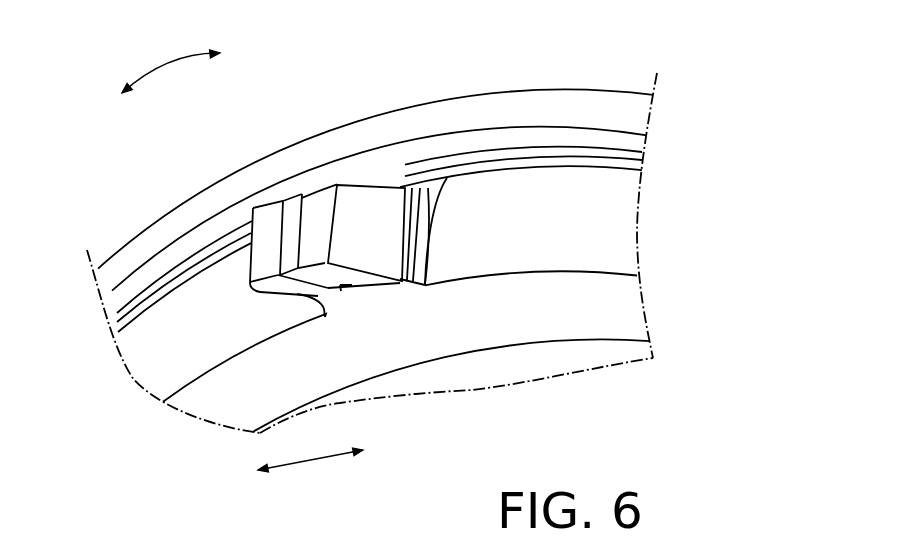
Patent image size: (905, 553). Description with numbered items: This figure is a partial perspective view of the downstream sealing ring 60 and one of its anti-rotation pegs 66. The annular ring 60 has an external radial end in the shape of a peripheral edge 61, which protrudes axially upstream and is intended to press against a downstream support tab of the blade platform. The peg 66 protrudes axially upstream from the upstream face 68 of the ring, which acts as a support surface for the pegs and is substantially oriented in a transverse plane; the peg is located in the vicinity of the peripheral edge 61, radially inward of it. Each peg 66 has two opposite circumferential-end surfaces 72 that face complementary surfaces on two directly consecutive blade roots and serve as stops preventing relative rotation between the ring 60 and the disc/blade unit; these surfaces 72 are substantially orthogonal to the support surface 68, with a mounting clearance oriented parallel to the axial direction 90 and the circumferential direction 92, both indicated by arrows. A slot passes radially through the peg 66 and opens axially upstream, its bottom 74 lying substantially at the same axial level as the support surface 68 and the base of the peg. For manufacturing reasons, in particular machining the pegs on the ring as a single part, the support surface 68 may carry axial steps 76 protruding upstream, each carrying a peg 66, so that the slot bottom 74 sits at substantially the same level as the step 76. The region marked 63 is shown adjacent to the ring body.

The downstream sealing ring 60 is at (203, 170).
The peripheral edge 61 is at (527, 107).
The front face of duct 63 is at (642, 206).
The peg 66 is at (356, 218).
The upstream face 68 is at (548, 195).
The circumferential-end surface 72 is at (322, 200).
The slot bottom 74 is at (347, 288).
The axial step 76 is at (420, 205).
The axial direction 90 is at (313, 462).
The circumferential direction 92 is at (140, 62).